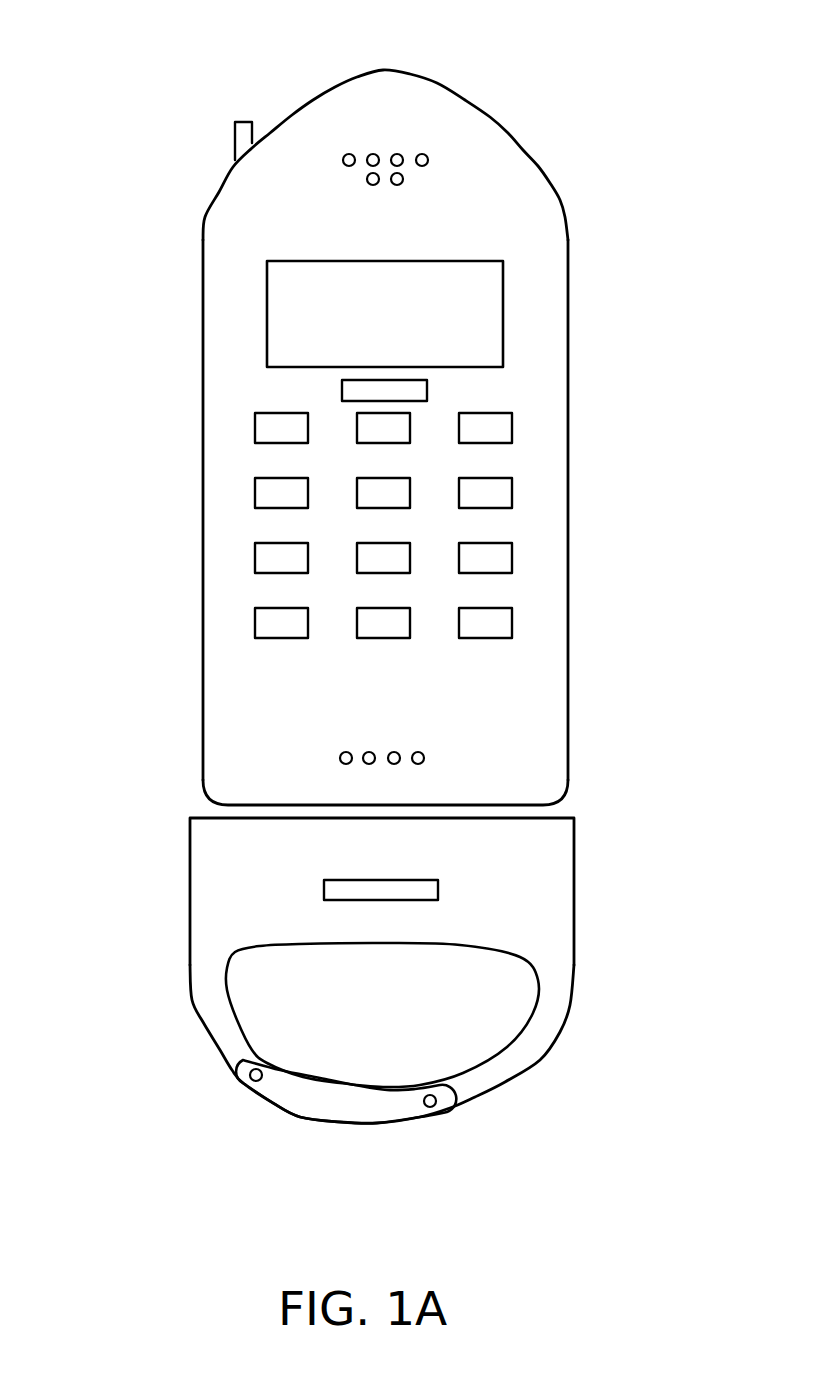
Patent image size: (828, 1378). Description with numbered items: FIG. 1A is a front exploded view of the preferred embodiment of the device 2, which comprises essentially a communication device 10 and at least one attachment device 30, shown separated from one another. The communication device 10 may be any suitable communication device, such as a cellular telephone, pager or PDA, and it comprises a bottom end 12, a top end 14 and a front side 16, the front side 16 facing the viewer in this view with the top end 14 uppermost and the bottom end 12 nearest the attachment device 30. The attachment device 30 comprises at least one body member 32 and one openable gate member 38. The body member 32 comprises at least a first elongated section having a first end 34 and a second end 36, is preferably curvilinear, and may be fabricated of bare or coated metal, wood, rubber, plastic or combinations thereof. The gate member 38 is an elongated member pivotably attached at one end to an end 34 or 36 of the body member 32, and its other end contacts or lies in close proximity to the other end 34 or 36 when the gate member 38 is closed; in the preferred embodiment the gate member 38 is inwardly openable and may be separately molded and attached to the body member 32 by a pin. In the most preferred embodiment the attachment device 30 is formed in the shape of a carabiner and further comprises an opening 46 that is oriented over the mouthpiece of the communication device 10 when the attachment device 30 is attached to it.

The device 2 is at (98, 527).
The communication device 10 is at (538, 480).
The bottom end 12 is at (242, 800).
The top end 14 is at (327, 80).
The front side 16 is at (240, 361).
The attachment device 30 is at (537, 892).
The body member 32 is at (543, 1023).
The first end 34 is at (450, 1100).
The second end 36 is at (242, 1065).
The gate member 38 is at (332, 1106).
The opening 46 is at (324, 889).